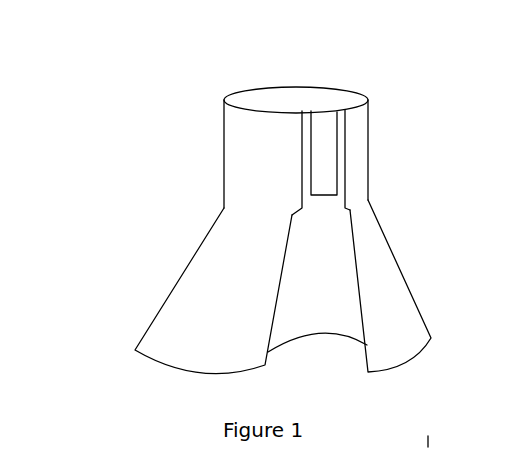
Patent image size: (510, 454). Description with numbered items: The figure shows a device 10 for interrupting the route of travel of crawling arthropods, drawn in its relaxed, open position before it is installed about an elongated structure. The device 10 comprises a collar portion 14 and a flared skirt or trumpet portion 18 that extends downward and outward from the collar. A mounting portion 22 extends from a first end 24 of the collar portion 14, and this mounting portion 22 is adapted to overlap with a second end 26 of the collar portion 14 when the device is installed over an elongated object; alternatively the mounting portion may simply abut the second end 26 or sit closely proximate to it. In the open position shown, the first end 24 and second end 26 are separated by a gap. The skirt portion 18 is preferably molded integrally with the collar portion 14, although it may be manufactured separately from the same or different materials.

The device 10 is at (120, 207).
The collar portion 14 is at (369, 128).
The flared skirt or trumpet portion 18 is at (388, 260).
The mounting portion 22 is at (295, 127).
The first end 24 is at (278, 160).
The second end 26 is at (346, 204).